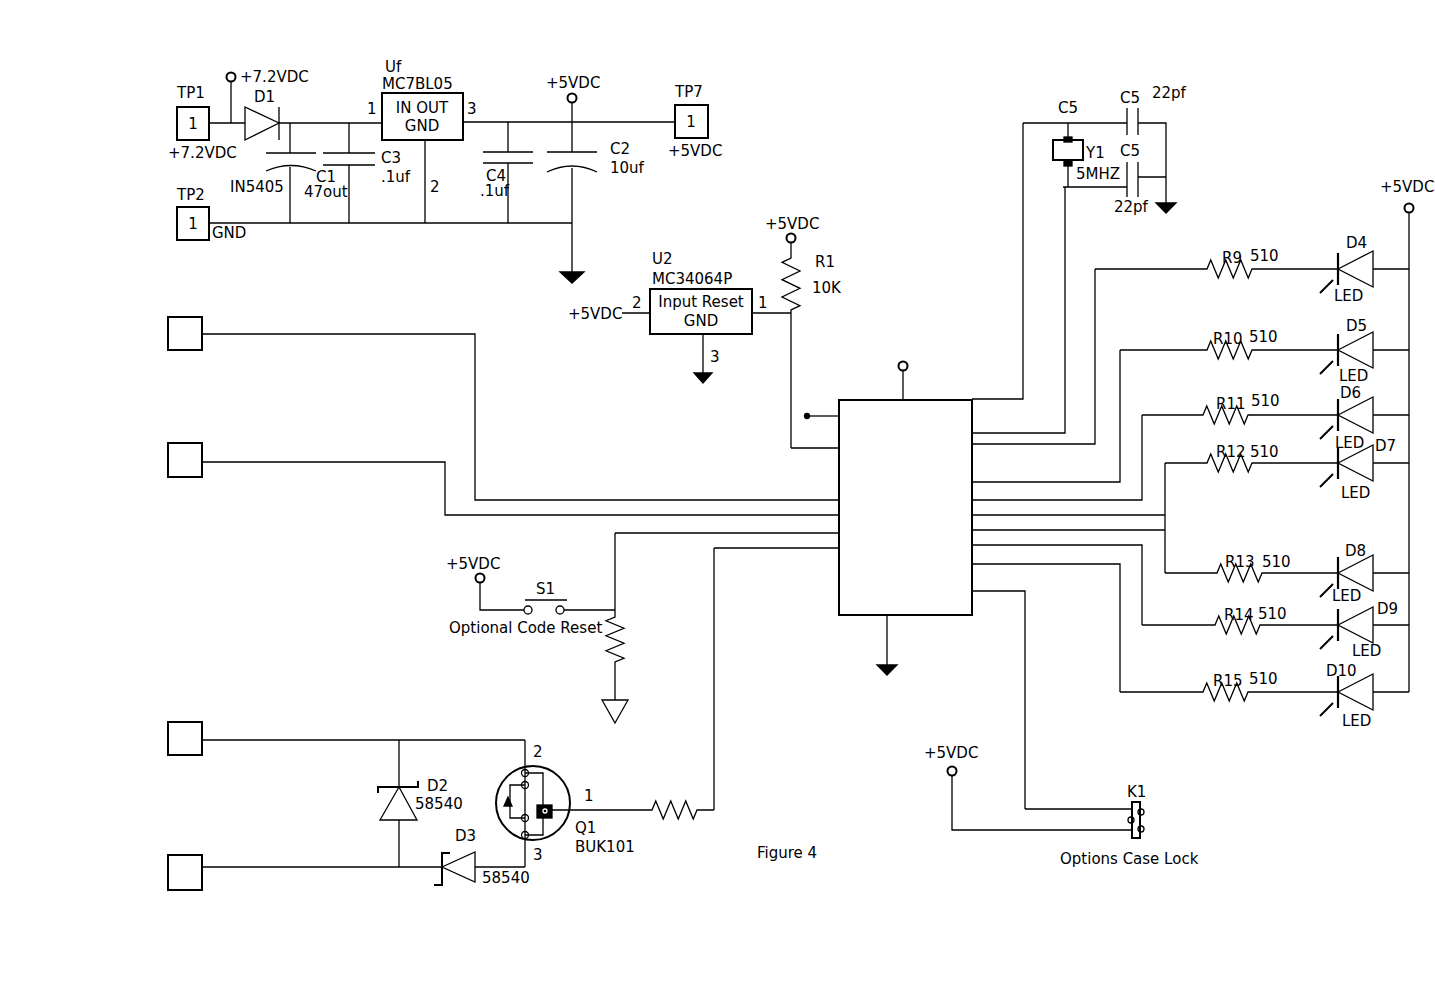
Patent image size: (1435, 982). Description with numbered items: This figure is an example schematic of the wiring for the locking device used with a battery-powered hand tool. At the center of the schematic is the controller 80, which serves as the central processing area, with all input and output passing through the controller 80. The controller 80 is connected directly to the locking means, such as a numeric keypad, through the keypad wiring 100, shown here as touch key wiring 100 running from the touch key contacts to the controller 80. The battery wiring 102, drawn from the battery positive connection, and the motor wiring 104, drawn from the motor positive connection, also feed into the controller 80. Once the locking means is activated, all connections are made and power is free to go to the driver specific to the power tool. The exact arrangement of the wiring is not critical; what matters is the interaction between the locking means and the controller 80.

The controller 80 is at (845, 607).
The keypad wiring 100 is at (390, 334).
The battery wiring 102 is at (288, 740).
The motor wiring 104 is at (297, 867).